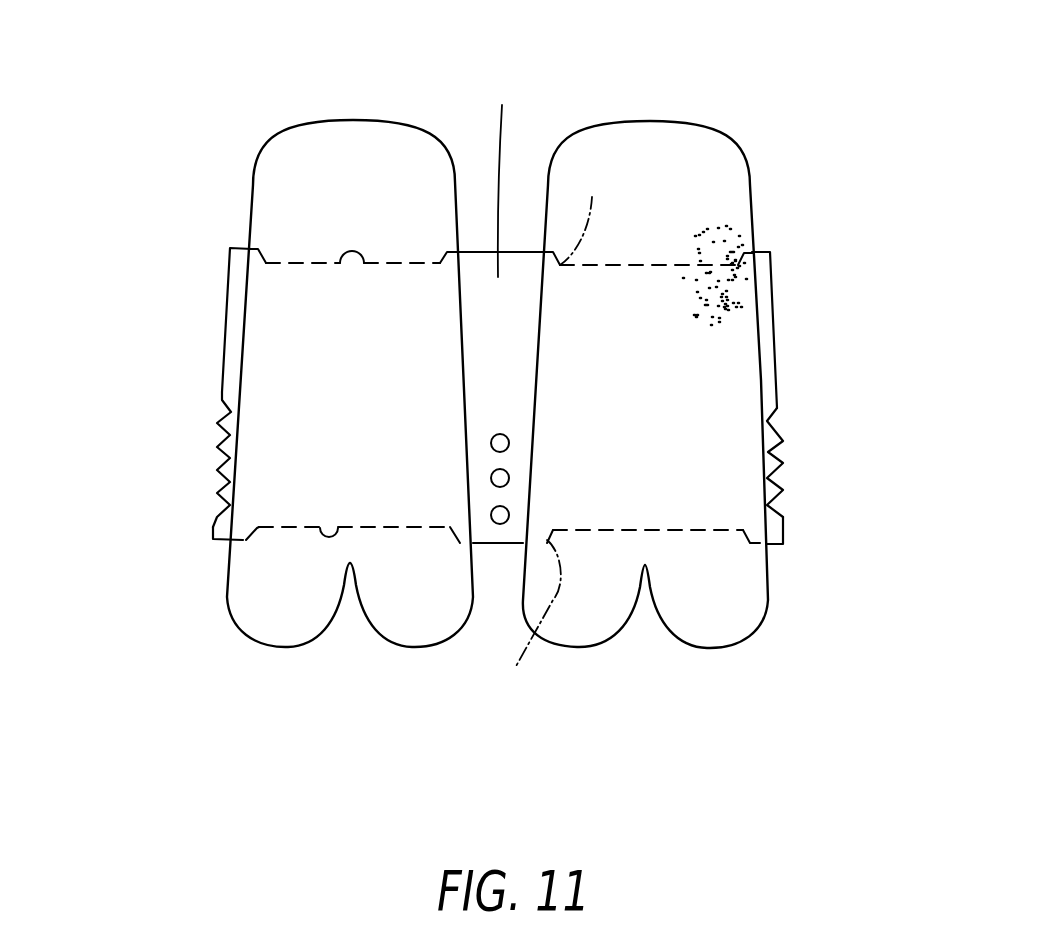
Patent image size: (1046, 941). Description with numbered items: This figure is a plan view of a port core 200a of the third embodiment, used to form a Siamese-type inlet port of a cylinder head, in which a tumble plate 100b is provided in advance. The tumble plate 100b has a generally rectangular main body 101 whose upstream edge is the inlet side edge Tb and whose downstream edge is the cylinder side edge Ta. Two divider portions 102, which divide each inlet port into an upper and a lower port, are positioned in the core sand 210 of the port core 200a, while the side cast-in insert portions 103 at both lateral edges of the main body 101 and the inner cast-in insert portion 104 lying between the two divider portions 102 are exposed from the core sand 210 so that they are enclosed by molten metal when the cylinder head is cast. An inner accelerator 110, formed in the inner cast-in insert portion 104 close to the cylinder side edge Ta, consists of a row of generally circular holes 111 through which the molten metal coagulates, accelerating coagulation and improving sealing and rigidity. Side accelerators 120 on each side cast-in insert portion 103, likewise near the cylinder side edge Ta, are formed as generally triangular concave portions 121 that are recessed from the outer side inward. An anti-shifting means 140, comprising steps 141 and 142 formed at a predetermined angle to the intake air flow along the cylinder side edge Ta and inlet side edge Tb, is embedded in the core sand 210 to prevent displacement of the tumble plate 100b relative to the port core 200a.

The port core 200a is at (306, 38).
The tumble plate 100b is at (222, 257).
The main body 101 is at (222, 368).
The divider portion 102 is at (319, 285).
The side cast-in insert portion 103 is at (233, 298).
The inner cast-in insert portion 104 is at (503, 167).
The inner accelerator 110 is at (484, 466).
The holes 111 is at (500, 478).
The side accelerator 120 is at (214, 448).
The concave portion 121 is at (222, 485).
The anti-shifting means 140 is at (598, 132).
The step 141 is at (519, 631).
The step 142 is at (596, 211).
The core sand 210 is at (712, 234).
The cylinder side edge Ta is at (341, 536).
The inlet side edge Tb is at (367, 267).